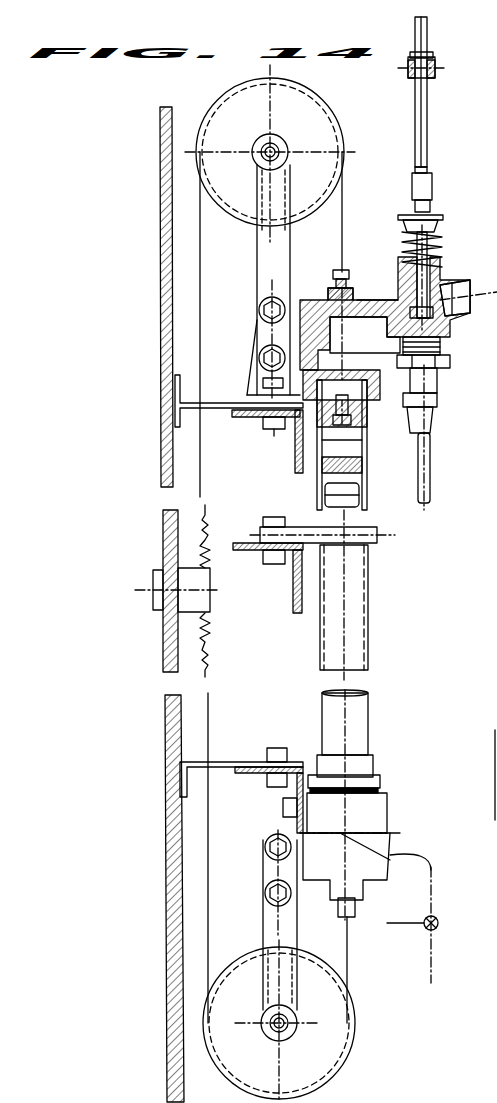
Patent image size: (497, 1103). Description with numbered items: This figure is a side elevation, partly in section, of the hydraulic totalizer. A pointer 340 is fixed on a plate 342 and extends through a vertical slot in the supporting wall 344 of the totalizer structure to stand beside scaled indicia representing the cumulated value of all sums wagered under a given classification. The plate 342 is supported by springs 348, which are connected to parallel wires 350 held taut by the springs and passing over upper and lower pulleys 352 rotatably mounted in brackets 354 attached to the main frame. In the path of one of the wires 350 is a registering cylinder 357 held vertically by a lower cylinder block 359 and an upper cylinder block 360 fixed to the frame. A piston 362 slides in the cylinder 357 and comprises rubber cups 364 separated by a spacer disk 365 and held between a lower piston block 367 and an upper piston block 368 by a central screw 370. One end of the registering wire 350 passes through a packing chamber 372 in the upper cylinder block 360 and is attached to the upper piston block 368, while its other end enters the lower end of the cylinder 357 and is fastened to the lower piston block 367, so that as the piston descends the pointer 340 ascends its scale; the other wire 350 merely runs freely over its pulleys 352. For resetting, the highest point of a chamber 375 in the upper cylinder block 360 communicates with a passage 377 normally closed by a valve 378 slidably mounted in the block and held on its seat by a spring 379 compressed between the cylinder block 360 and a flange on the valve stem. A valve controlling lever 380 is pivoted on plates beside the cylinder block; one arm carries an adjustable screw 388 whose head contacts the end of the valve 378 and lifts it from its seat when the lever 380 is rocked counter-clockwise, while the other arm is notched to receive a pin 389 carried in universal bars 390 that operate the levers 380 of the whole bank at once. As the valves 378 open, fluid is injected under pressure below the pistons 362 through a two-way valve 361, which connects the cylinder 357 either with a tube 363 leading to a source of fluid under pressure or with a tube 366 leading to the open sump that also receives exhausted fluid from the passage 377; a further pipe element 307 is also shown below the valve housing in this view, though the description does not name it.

The discharge pipe 307 is at (431, 456).
The pointer 340 is at (153, 584).
The plate 342 is at (210, 584).
The supporting wall 344 is at (165, 632).
The springs 348 is at (207, 545).
The wires 350 is at (340, 259).
The pulleys 352 is at (344, 123).
The brackets 354 is at (257, 260).
The registering cylinder 357 is at (368, 581).
The lower cylinder block 359 is at (387, 816).
The upper cylinder block 360 is at (310, 300).
The two-way valve 361 is at (438, 922).
The piston 362 is at (367, 445).
The tube 363 is at (432, 963).
The rubber cups 364 is at (372, 398).
The spacer disk 365 is at (270, 430).
The tube 366 is at (396, 925).
The lower piston block 367 is at (360, 490).
The upper piston block 368 is at (345, 360).
The central screw 370 is at (333, 420).
The packing chamber 372 is at (353, 290).
The chamber 375 is at (377, 299).
The passage 377 is at (463, 315).
The valve 378 is at (432, 275).
The spring 379 is at (440, 235).
The valve controlling lever 380 is at (427, 121).
The adjustable screw 388 is at (432, 200).
The pin 389 is at (430, 76).
The universal bars 390 is at (427, 60).